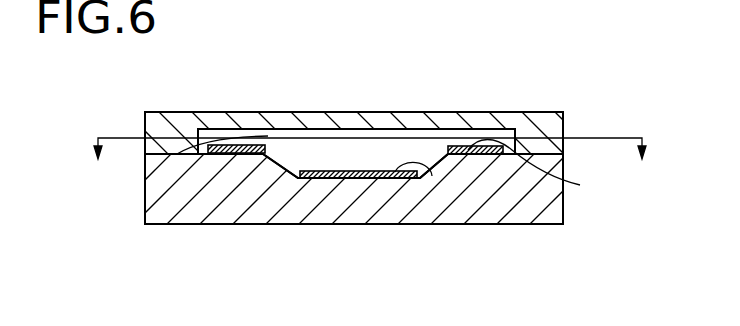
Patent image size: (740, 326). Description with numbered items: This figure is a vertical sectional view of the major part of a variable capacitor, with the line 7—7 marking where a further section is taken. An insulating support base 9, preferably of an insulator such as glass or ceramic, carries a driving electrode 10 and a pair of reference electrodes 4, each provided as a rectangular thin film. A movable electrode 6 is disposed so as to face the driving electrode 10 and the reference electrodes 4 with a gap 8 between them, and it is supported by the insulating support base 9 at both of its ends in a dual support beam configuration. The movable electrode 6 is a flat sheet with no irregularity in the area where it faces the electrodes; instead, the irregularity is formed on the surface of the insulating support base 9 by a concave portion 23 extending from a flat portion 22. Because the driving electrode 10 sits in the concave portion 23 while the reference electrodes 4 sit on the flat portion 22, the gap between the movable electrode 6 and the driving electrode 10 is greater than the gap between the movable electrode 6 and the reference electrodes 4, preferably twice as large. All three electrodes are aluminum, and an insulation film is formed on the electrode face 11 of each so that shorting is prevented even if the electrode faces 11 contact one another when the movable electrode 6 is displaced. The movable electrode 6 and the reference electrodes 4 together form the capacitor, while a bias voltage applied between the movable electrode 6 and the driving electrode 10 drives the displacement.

The reference electrode 4 is at (262, 120).
The movable electrode 6 is at (492, 113).
The line 7— 7 is at (366, 165).
The gap 8 is at (383, 150).
The insulating support base 9 is at (498, 208).
The driving electrode 10 is at (388, 176).
The electrode face 11 is at (180, 153).
The flat portion 22 is at (229, 156).
The concave portion 23 is at (313, 180).